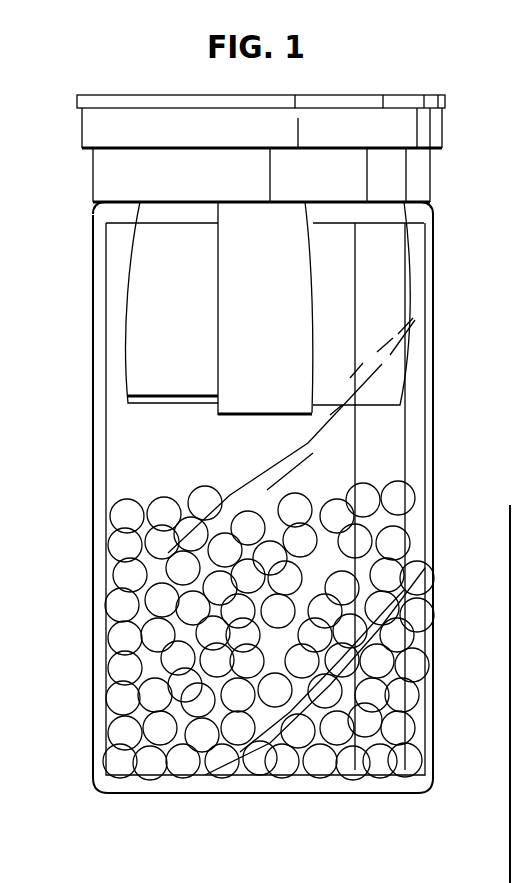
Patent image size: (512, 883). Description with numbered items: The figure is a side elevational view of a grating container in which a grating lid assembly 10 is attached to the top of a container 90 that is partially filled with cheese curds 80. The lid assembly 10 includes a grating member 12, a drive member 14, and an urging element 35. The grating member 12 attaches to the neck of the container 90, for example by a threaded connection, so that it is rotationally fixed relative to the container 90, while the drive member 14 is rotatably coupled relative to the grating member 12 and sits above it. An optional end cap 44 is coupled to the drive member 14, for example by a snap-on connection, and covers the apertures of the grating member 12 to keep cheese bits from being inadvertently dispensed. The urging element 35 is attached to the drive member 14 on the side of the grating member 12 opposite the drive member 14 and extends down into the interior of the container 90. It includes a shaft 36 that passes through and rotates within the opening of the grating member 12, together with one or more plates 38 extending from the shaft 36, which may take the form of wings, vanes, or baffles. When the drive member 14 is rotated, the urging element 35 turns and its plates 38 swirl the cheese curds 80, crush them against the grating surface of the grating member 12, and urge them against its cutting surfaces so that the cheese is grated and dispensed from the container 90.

The grating lid assembly 10 is at (74, 131).
The end cap 44 is at (405, 102).
The drive member 14 is at (412, 127).
The grating member 12 is at (394, 180).
The container 90 is at (446, 454).
The urging element 35 is at (335, 287).
The plates 38 is at (380, 313).
The shaft 36 is at (242, 382).
The cheese curds 80 is at (328, 557).